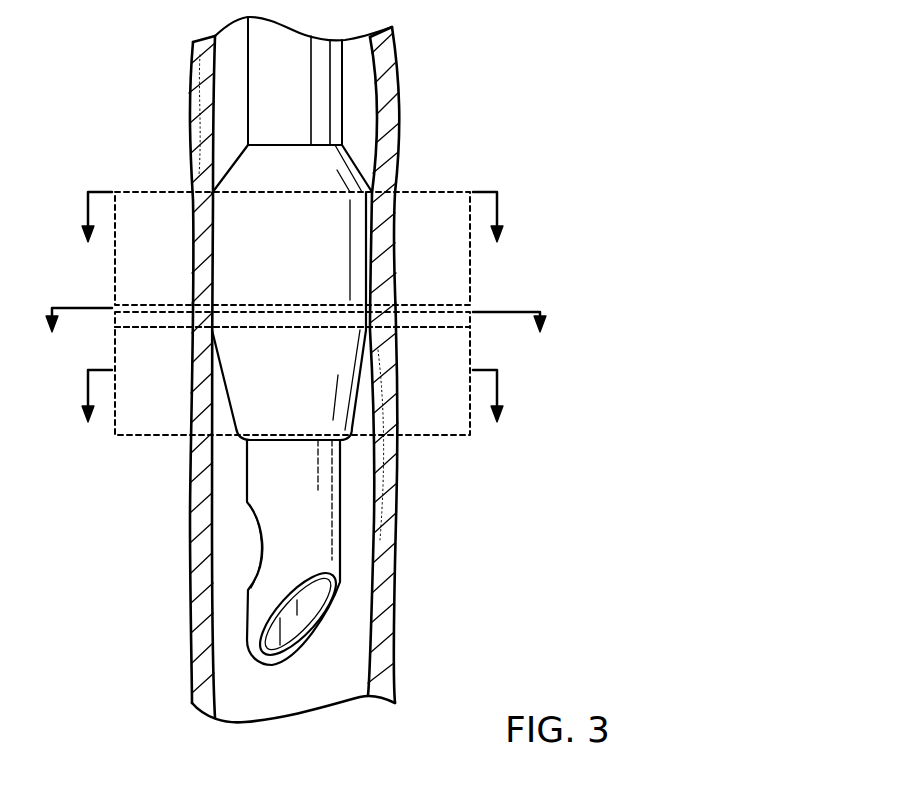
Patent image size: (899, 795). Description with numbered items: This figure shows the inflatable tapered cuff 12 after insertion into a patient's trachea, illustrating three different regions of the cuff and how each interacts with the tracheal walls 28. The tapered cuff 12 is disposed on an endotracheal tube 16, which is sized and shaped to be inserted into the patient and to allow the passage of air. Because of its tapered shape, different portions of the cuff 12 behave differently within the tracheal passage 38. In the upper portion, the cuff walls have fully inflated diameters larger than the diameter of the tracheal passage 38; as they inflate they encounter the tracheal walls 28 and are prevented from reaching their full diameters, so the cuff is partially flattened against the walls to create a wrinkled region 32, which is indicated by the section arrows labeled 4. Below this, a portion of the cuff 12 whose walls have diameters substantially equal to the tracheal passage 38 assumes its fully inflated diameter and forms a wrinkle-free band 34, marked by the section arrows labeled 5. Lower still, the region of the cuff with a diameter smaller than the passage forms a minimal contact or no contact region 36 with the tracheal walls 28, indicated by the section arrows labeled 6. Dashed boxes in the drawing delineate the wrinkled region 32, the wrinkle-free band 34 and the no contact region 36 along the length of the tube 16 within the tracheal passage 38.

The tapered cuff 12 is at (237, 185).
The endotracheal tube 16 is at (258, 102).
The tracheal walls 28 is at (195, 517).
The wrinkled region 32 is at (470, 238).
The wrinkle-free band 34 is at (473, 323).
The minimal contact or no contact region 36 is at (442, 435).
The tracheal passage 38 is at (285, 705).
The section line 4- 4 is at (292, 217).
The section line 5- 5 is at (296, 322).
The section line 6- 6 is at (292, 396).